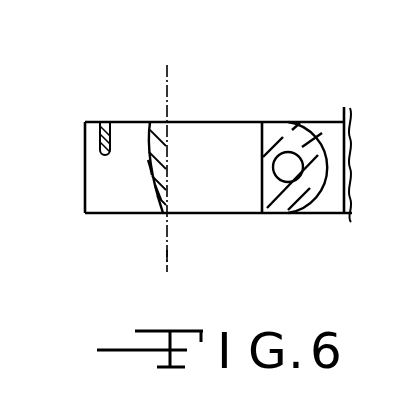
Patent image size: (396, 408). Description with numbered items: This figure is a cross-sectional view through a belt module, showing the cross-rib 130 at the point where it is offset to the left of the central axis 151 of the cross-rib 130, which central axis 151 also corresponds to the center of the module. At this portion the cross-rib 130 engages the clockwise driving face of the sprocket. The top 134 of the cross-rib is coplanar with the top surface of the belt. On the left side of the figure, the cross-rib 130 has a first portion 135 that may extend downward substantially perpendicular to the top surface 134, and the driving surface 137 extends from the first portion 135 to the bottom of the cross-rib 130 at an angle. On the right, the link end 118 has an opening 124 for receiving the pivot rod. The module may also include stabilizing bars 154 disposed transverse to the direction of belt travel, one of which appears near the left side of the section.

The link end 118 is at (272, 137).
The opening 124 is at (290, 170).
The cross-rib 130 is at (150, 122).
The top of the cross-rib 134 is at (158, 122).
The first portion 135 is at (148, 160).
The driving surface 137 is at (157, 188).
The central axis 151 is at (168, 257).
The stabilizing bar 154 is at (104, 148).